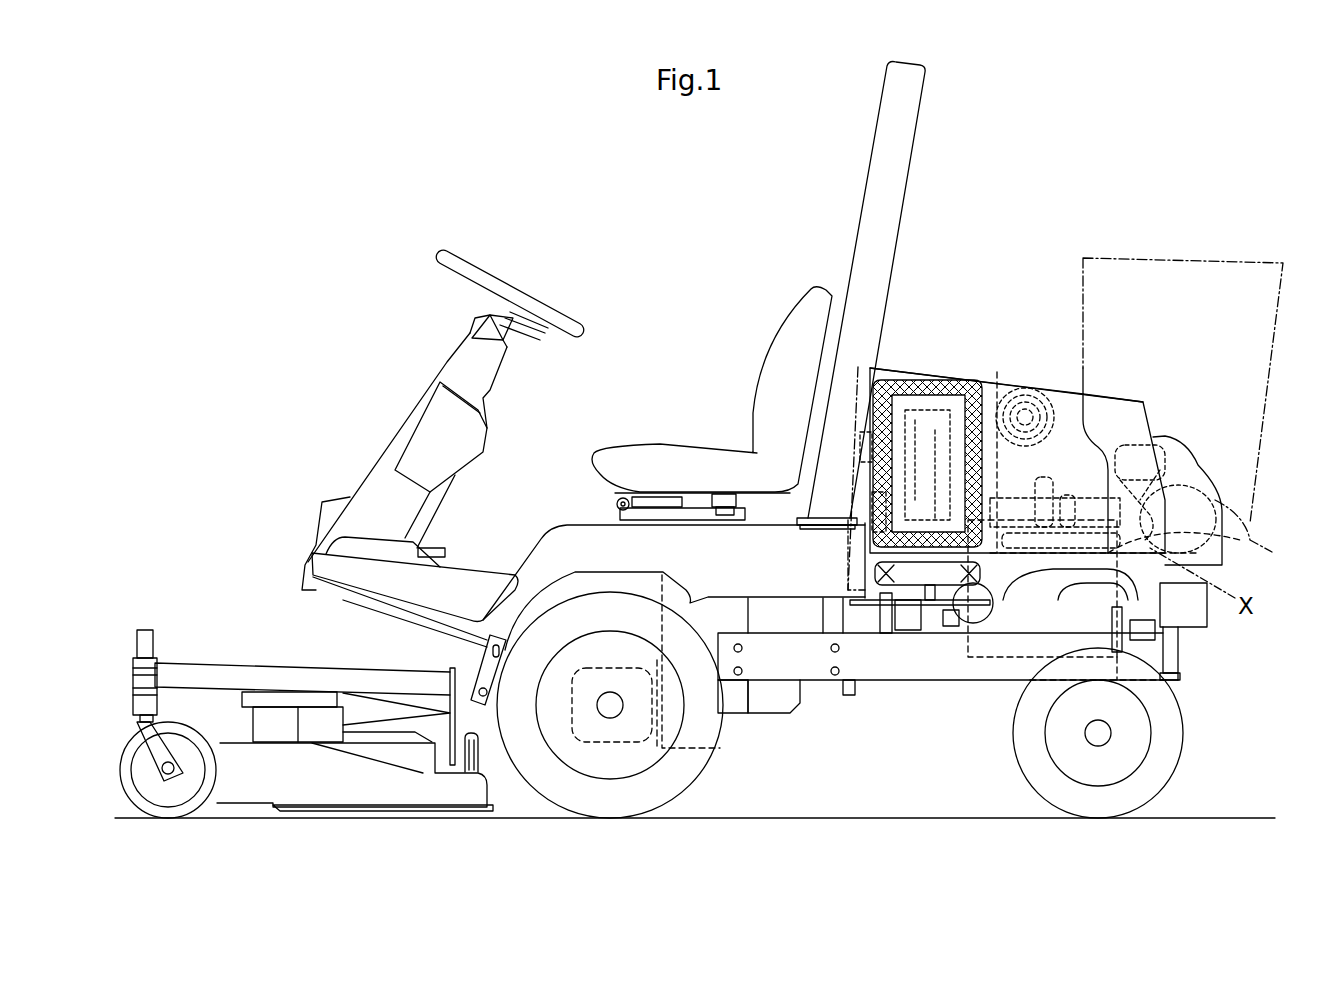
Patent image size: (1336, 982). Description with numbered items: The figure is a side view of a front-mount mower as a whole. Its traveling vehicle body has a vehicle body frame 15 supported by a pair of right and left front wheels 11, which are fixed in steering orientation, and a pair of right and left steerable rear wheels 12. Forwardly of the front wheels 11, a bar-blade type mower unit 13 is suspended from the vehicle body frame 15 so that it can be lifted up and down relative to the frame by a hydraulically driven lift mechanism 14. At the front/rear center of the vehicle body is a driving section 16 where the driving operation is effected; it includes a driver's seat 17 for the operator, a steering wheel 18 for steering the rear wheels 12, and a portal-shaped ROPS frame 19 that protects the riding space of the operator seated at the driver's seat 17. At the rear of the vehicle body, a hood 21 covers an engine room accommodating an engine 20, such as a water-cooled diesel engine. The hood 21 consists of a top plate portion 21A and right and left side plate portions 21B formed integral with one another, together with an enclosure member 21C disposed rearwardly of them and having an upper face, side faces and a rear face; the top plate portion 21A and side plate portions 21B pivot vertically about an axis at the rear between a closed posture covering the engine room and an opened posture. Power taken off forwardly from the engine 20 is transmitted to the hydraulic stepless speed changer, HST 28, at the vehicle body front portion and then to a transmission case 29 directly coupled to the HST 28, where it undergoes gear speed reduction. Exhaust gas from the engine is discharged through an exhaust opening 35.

The front wheels 11 is at (700, 780).
The rear wheels 12 is at (1168, 783).
The mower unit 13 is at (227, 650).
The lift mechanism 14 is at (377, 702).
The vehicle body frame 15 is at (890, 673).
The driving section 16 is at (672, 200).
The driver's seat 17 is at (783, 335).
The steering wheel 18 is at (493, 276).
The ROPS frame 19 is at (878, 148).
The engine 20 is at (1143, 592).
The hood 21 is at (893, 366).
The top plate portion 21A is at (1062, 390).
The side plate portions 21B is at (1108, 412).
The enclosure member 21C is at (1162, 477).
The HST 28 is at (813, 688).
The transmission case 29 is at (757, 740).
The exhaust opening 35 is at (1197, 628).